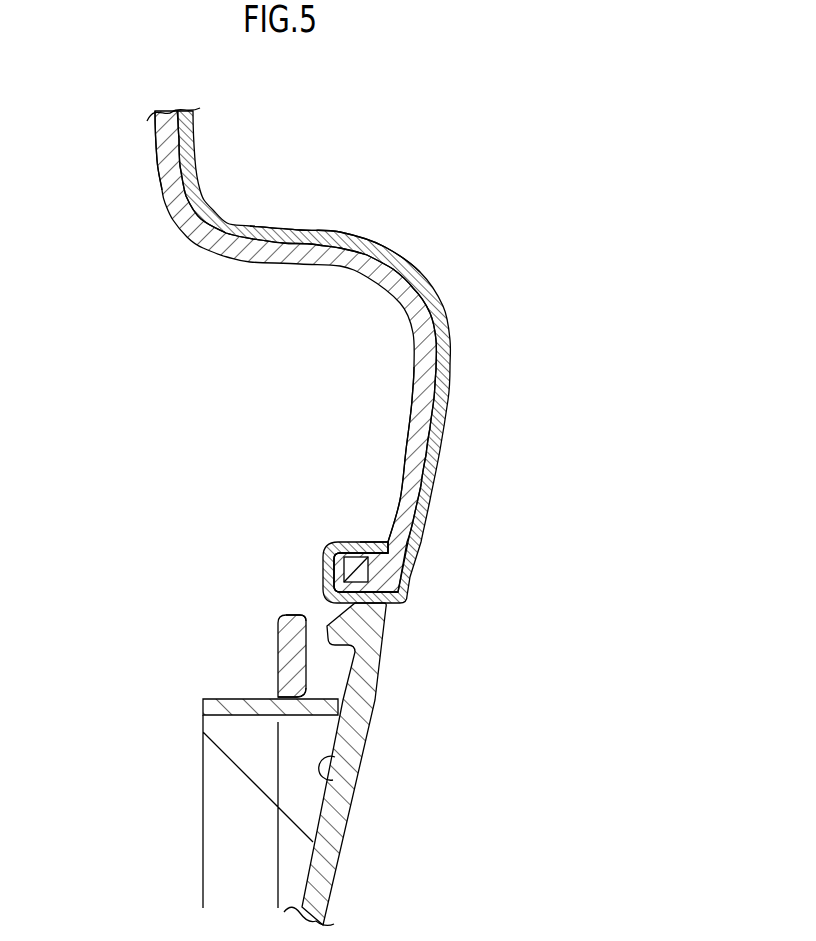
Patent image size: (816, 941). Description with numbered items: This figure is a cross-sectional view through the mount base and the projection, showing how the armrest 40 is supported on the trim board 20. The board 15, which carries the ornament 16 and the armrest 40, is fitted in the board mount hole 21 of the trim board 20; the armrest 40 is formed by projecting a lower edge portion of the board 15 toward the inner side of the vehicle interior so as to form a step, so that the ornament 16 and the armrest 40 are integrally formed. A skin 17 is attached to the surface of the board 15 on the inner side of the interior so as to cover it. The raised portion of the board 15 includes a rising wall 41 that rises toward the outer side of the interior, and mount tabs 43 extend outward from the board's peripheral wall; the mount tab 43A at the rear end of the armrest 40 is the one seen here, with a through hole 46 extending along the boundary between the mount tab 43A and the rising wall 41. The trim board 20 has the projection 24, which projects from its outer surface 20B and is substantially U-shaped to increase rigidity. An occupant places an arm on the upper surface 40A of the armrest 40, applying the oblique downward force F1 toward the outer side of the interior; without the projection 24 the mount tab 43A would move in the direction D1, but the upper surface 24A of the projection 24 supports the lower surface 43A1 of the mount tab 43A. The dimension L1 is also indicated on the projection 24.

The board 15 is at (297, 350).
The ornament 16 is at (162, 162).
The skin 17 is at (449, 421).
The board mount hole 21 is at (352, 548).
The armrest 40 is at (360, 357).
The upper surface 40A is at (338, 229).
The rising wall 41 is at (376, 556).
The mount tabs 43 is at (197, 634).
The mount tab 43A is at (278, 643).
The lower surface 43A1 is at (292, 700).
The through hole 46 is at (295, 615).
The projection 24 is at (204, 797).
The upper surface 24A is at (230, 699).
The trim board 20 is at (373, 764).
The outer surface 20B is at (335, 783).
The force F1 is at (446, 268).
The moving direction D1 is at (253, 697).
The length L1 is at (278, 836).